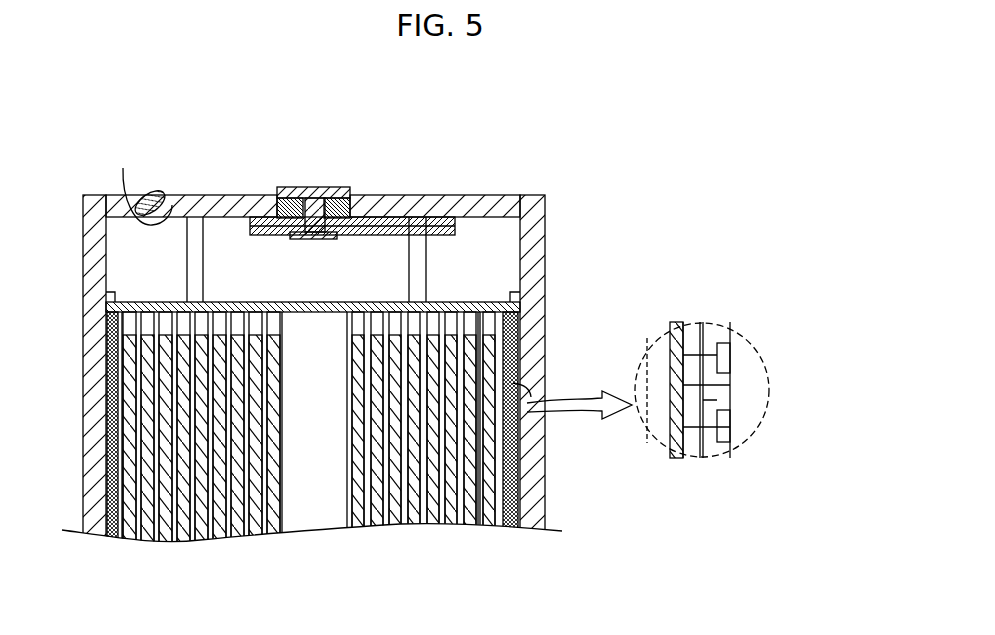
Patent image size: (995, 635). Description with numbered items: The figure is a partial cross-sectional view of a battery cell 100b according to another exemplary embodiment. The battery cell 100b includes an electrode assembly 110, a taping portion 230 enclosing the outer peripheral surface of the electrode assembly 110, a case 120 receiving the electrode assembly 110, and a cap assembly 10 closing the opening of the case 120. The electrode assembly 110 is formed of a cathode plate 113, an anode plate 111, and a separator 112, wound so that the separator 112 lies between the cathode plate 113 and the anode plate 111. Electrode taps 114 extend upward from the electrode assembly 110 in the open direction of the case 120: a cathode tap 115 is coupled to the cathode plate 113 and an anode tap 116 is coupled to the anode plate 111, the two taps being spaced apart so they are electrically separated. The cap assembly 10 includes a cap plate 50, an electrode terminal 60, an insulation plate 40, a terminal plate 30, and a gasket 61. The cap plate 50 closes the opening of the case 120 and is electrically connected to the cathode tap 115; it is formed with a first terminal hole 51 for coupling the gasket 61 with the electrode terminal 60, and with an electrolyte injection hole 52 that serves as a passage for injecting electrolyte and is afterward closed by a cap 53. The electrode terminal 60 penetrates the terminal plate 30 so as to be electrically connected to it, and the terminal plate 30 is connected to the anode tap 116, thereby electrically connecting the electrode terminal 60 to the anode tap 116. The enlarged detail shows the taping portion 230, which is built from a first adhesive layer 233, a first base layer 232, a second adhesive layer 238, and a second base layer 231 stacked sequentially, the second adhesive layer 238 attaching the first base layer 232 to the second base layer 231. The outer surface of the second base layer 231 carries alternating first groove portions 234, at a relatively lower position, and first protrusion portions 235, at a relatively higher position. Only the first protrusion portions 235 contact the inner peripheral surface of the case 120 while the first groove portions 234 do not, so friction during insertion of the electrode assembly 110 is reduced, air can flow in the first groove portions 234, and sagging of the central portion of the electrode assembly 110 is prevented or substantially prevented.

The battery cell 100b is at (88, 91).
The cap assembly 10 is at (414, 192).
The terminal plate 30 is at (262, 218).
The insulation plate 40 is at (455, 226).
The cap plate 50 is at (485, 194).
The first terminal hole 51 is at (360, 207).
The electrolyte injection hole 52 is at (140, 186).
The cap 53 is at (152, 191).
The electrode terminal 60 is at (281, 189).
The gasket 61 is at (330, 196).
The electrode assembly 110 is at (443, 465).
The anode plate 111 is at (508, 446).
The separator 112 is at (478, 524).
The cathode plate 113 is at (472, 524).
The electrode taps 114 is at (415, 274).
The cathode tap 115 is at (197, 258).
The anode tap 116 is at (417, 282).
The case 120 is at (537, 497).
The taping portion 230 is at (754, 369).
The second base layer 231 is at (719, 353).
The first base layer 232 is at (690, 400).
The first adhesive layer 233 is at (761, 428).
The first groove portions 234 is at (718, 357).
The first protrusion portions 235 is at (678, 365).
The second adhesive layer 238 is at (706, 367).